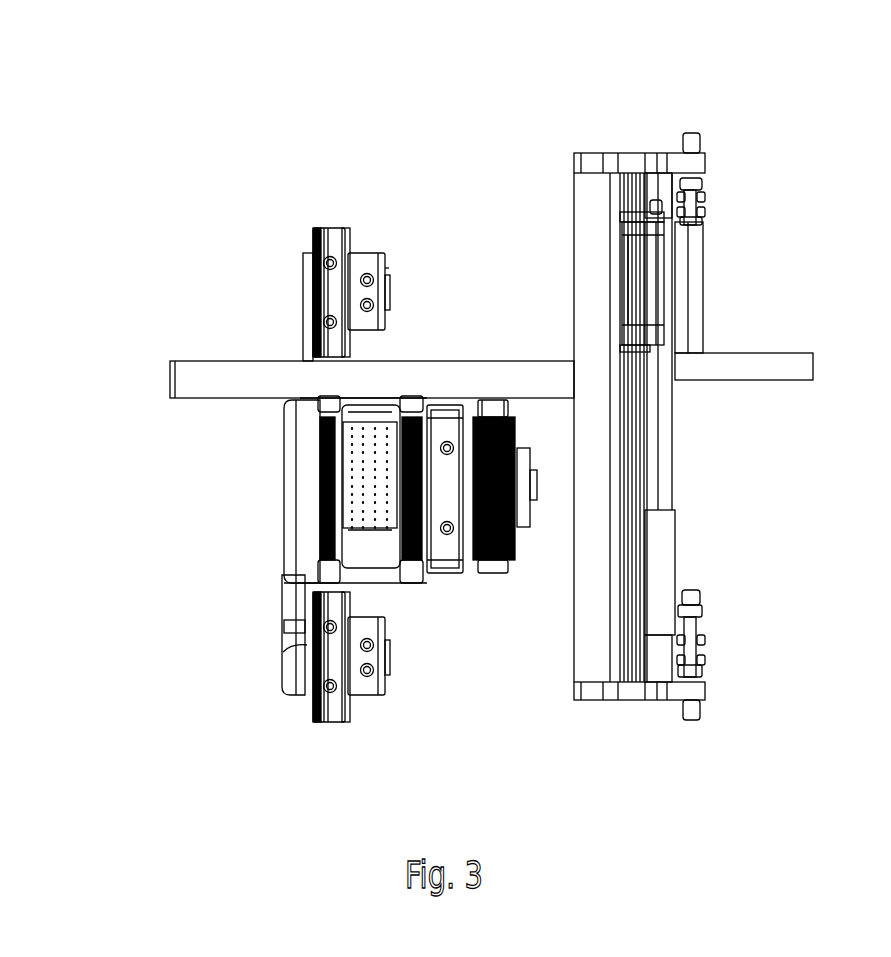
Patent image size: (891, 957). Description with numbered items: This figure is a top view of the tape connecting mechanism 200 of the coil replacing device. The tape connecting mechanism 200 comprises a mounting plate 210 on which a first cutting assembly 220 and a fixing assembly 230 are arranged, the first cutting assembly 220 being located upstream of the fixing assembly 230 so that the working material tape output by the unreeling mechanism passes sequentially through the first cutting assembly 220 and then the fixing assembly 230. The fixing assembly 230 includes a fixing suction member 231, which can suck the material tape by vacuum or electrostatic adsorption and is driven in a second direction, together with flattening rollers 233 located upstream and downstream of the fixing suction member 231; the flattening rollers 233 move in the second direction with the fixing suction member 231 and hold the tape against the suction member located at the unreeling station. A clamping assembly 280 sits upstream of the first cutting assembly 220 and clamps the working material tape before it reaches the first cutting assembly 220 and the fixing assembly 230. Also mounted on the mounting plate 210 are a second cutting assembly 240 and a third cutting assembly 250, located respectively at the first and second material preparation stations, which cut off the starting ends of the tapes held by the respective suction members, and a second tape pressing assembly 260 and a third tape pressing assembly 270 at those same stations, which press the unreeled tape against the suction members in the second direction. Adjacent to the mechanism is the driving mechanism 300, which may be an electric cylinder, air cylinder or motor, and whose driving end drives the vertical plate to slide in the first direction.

The tape connecting mechanism 200 is at (92, 64).
The mounting plate 210 is at (190, 382).
The first cutting assembly 220 is at (450, 584).
The fixing assembly 230 is at (267, 377).
The fixing suction member 231 is at (320, 507).
The flattening rollers 233 is at (320, 477).
The second cutting assembly 240 is at (305, 637).
The third cutting assembly 250 is at (325, 279).
The second tape pressing assembly 260 is at (330, 672).
The third tape pressing assembly 270 is at (325, 312).
The clamping assembly 280 is at (526, 556).
The driving mechanism 300 is at (663, 553).